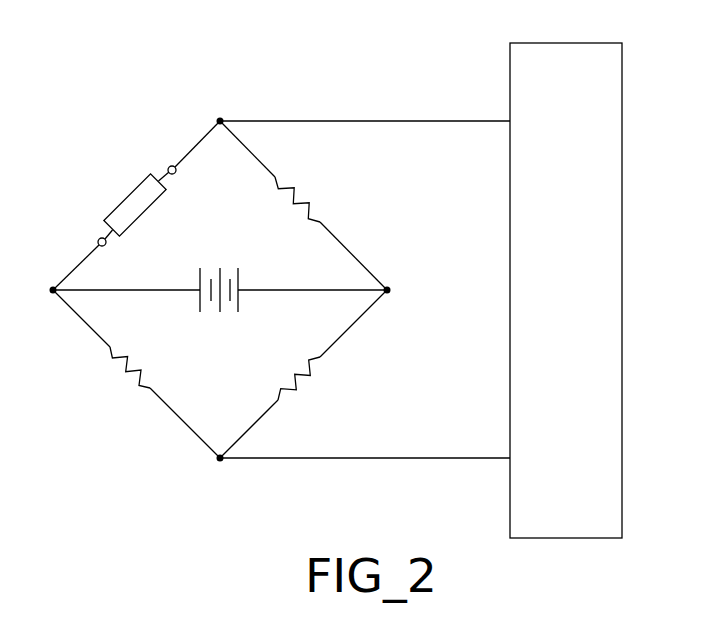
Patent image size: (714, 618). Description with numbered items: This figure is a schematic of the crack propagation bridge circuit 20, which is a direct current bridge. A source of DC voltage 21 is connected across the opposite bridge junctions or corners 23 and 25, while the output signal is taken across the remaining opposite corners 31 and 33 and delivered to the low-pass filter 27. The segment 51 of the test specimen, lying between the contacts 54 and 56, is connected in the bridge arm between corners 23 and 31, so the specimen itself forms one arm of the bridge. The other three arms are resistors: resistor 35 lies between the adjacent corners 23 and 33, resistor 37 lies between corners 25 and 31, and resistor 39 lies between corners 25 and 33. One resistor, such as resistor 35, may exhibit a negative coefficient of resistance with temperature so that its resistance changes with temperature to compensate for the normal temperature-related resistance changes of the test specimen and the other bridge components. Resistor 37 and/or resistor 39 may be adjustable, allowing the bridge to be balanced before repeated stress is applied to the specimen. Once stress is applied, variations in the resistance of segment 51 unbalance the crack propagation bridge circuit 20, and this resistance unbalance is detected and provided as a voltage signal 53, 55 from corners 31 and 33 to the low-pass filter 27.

The crack propagation bridge circuit 20 is at (436, 247).
The source of DC voltage 21 is at (230, 313).
The bridge junction or corner 23 is at (53, 292).
The bridge junction or corner 25 is at (388, 290).
The low-pass filter 27 is at (622, 75).
The bridge corner 31 is at (220, 121).
The bridge corner 33 is at (218, 462).
The resistor 35 is at (147, 376).
The resistor 37 is at (298, 192).
The resistor 39 is at (302, 387).
The segment of test specimen 51 is at (123, 197).
The voltage signal 53 is at (373, 121).
The contact 54 is at (100, 238).
The voltage signal 55 is at (388, 458).
The contact 56 is at (170, 165).